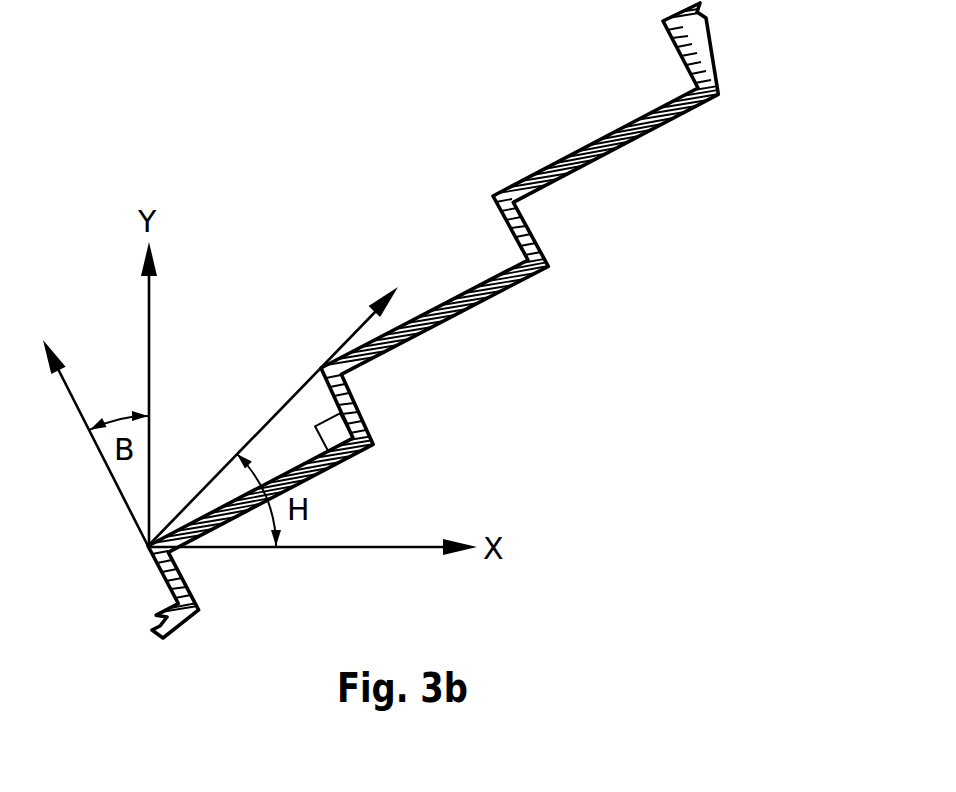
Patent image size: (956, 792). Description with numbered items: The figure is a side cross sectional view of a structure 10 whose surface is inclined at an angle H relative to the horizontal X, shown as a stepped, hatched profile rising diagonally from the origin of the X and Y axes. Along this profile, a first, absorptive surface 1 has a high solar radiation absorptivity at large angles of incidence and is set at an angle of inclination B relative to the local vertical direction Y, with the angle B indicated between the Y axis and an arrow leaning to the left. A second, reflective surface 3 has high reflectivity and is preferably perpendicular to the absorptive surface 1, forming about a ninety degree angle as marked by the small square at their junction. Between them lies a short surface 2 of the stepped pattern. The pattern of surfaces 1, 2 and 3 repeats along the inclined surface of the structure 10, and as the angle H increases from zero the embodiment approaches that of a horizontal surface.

The absorptive surface 1 is at (372, 426).
The second surface segment (riser) 2 is at (350, 375).
The reflective surface 3 is at (443, 320).
The structure 10 is at (656, 428).